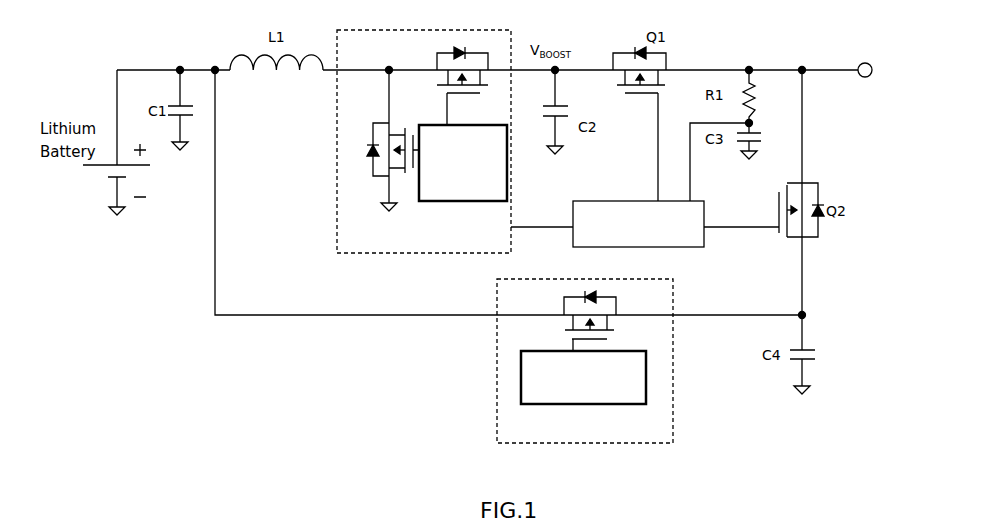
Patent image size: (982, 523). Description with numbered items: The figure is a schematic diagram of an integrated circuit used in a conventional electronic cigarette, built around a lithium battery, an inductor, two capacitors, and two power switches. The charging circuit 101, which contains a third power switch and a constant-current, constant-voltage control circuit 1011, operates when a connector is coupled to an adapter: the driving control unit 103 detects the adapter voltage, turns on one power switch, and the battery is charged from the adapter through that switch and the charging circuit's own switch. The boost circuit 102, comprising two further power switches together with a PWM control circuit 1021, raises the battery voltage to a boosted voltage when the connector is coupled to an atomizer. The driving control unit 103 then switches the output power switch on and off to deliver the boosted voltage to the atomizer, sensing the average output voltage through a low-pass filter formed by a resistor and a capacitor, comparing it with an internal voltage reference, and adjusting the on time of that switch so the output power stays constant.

The charging circuit 101 is at (601, 378).
The CC_CV control circuit 1011 is at (565, 405).
The boost circuit 102 is at (424, 159).
The PWM control circuit 1021 is at (438, 202).
The driving control unit 103 is at (690, 248).